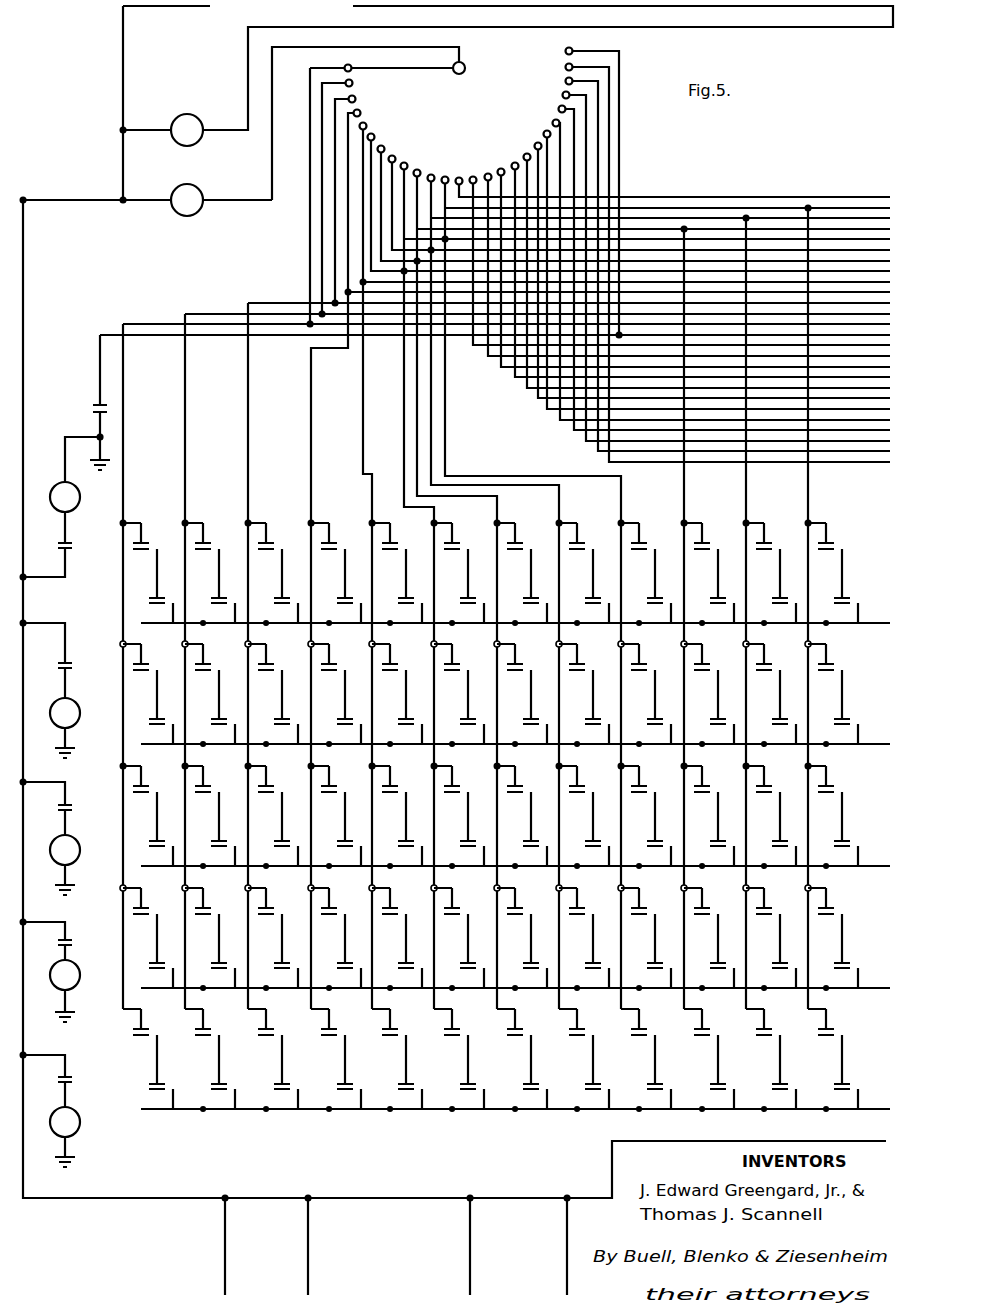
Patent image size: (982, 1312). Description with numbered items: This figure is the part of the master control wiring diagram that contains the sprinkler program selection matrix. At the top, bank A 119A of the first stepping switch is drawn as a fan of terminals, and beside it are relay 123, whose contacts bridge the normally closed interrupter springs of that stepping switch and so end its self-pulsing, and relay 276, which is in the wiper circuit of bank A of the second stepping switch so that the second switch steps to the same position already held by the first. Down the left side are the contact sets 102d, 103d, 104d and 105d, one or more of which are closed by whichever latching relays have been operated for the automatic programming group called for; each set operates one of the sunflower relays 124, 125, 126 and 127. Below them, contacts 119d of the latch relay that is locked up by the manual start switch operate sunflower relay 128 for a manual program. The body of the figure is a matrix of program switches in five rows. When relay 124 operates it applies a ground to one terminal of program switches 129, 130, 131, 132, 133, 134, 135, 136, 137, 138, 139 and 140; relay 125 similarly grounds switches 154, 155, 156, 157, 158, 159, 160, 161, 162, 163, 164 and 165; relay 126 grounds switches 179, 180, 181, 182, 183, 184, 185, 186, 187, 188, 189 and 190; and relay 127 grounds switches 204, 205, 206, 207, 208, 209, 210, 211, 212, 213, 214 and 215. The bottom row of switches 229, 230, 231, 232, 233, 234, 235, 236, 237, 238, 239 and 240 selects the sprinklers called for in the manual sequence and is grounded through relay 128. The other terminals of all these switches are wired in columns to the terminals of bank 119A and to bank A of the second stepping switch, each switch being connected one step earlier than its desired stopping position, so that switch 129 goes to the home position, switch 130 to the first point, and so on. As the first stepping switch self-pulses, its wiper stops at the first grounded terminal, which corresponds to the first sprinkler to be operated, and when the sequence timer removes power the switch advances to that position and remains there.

The relay 276 is at (196, 97).
The relay 123 is at (196, 167).
The bank A of stepping switch 119 119A is at (492, 118).
The sunflower relay 124 is at (72, 504).
The contacts of latching relay 102 102d is at (73, 544).
The contacts of latching relay 103 103d is at (88, 652).
The sunflower relay 125 is at (66, 711).
The contacts of latching relay 104 104d is at (73, 807).
The sunflower relay 126 is at (66, 848).
The contacts of latching relay 105 105d is at (73, 942).
The sunflower relay 127 is at (66, 973).
The contacts of latch relay 119 119d is at (73, 1079).
The sunflower relay 128 is at (68, 1122).
The program switch 129 is at (149, 542).
The program switch 130 is at (211, 542).
The program switch 131 is at (274, 542).
The program switch 132 is at (337, 542).
The program switch 133 is at (398, 548).
The program switch 134 is at (460, 542).
The program switch 135 is at (523, 542).
The program switch 136 is at (585, 542).
The program switch 137 is at (647, 542).
The program switch 138 is at (710, 542).
The program switch 139 is at (772, 542).
The program switch 140 is at (834, 542).
The program switch 154 is at (149, 663).
The program switch 155 is at (211, 663).
The program switch 156 is at (274, 663).
The program switch 157 is at (337, 663).
The program switch 158 is at (398, 663).
The program switch 159 is at (460, 663).
The program switch 160 is at (523, 663).
The program switch 161 is at (585, 663).
The program switch 162 is at (647, 663).
The program switch 163 is at (710, 663).
The program switch 164 is at (772, 663).
The program switch 165 is at (834, 663).
The program switch 179 is at (149, 785).
The program switch 180 is at (211, 785).
The program switch 181 is at (274, 785).
The program switch 182 is at (337, 785).
The program switch 183 is at (398, 785).
The program switch 184 is at (460, 785).
The program switch 185 is at (523, 785).
The program switch 186 is at (585, 785).
The program switch 187 is at (647, 785).
The program switch 188 is at (710, 785).
The program switch 189 is at (772, 785).
The program switch 190 is at (834, 785).
The program switch 204 is at (149, 907).
The program switch 205 is at (211, 907).
The program switch 206 is at (274, 907).
The program switch 207 is at (337, 907).
The program switch 208 is at (398, 907).
The program switch 209 is at (460, 907).
The program switch 210 is at (523, 907).
The program switch 211 is at (585, 907).
The program switch 212 is at (647, 907).
The program switch 213 is at (710, 907).
The program switch 214 is at (772, 907).
The program switch 215 is at (834, 907).
The manual program switch 229 is at (149, 1033).
The manual program switch 230 is at (211, 1033).
The manual program switch 231 is at (274, 1033).
The manual program switch 232 is at (337, 1033).
The manual program switch 233 is at (398, 1033).
The manual program switch 234 is at (460, 1033).
The manual program switch 235 is at (523, 1033).
The manual program switch 236 is at (585, 1033).
The manual program switch 237 is at (647, 1033).
The manual program switch 238 is at (710, 1033).
The manual program switch 239 is at (772, 1033).
The manual program switch 240 is at (834, 1033).